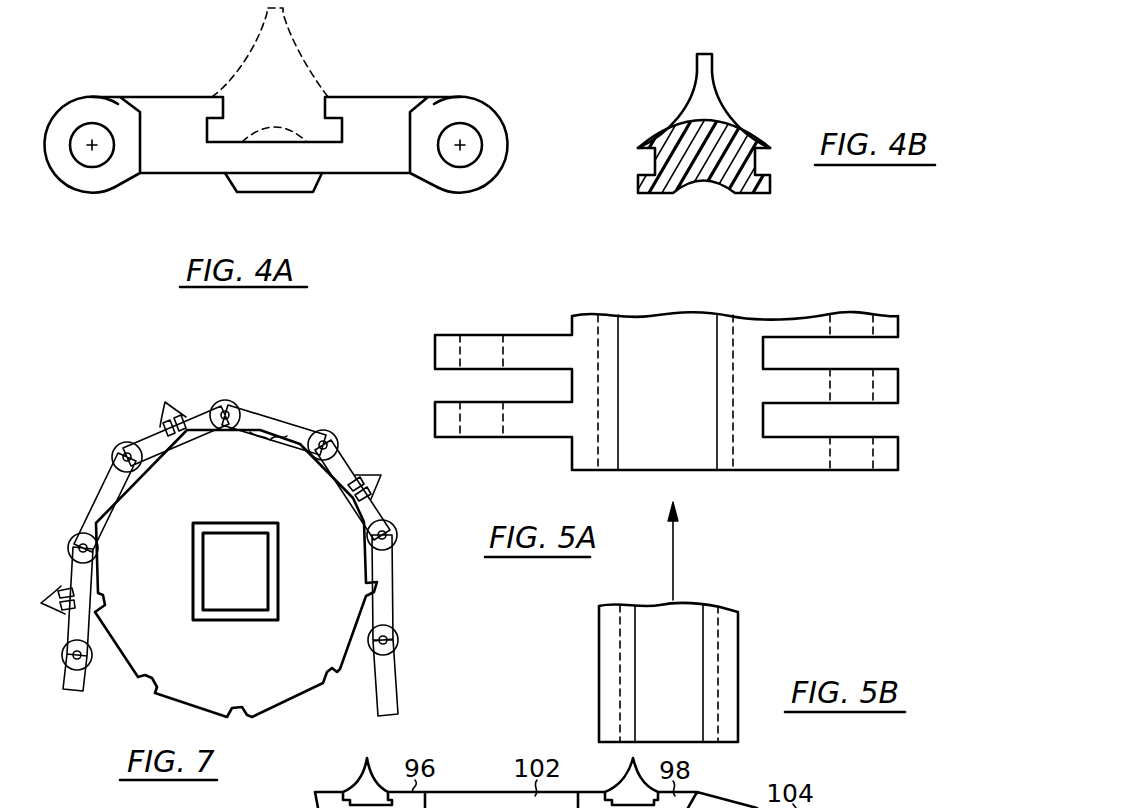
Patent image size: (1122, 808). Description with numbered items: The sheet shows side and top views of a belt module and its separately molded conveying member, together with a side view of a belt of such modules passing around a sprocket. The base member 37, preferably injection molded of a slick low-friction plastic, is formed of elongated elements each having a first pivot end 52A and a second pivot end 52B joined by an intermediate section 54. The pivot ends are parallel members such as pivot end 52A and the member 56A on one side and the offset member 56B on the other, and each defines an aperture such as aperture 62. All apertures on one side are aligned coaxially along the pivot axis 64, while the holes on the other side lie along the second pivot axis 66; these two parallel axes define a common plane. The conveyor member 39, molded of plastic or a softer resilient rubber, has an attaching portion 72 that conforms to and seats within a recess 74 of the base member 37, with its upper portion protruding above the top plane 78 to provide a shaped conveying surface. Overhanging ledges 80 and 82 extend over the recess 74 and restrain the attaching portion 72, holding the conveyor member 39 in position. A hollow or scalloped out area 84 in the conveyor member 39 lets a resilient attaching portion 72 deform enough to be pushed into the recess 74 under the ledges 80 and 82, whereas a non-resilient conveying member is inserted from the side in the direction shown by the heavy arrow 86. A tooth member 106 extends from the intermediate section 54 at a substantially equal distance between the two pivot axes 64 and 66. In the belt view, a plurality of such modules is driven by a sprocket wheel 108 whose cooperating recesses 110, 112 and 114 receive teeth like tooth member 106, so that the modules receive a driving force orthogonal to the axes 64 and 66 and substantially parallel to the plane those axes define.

In FIG. 4A, the base member 37 is at (325, 158).
In FIG. 5A, the base member 37 is at (583, 463).
In FIG. 4B, the conveyor member 39 is at (715, 72).
In FIG. 5B, the conveyor member 39 is at (730, 633).
In FIG. 4A, the first pivot end 52A is at (478, 183).
In FIG. 5A, the first pivot end 52A is at (897, 463).
In FIG. 4A, the second pivot end 52B is at (82, 186).
In FIG. 5A, the second pivot end 52B is at (435, 419).
In FIG. 4A, the intermediate section 54 is at (212, 158).
In FIG. 5A, the parallel member 56A is at (885, 397).
In FIG. 5A, the parallel member 56B is at (435, 352).
In FIG. 4A, the aperture 62 is at (452, 160).
In FIG. 5A, the aperture 62 is at (848, 463).
In FIG. 4A, the pivot axis 64 is at (461, 137).
In FIG. 4A, the second pivot axis 66 is at (91, 137).
In FIG. 4B, the attaching portion 72 is at (723, 178).
In FIG. 4A, the recess 74 is at (258, 116).
In FIG. 5A, the recess 74 is at (663, 331).
In FIG. 4A, the top plane 78 is at (397, 97).
In FIG. 4A, the ledge 80 is at (220, 96).
In FIG. 5A, the ledge 80 is at (612, 379).
In FIG. 4A, the ledge 82 is at (334, 99).
In FIG. 5A, the ledge 82 is at (717, 430).
In FIG. 4B, the hollow or scalloped out area 84 is at (702, 183).
In FIG. 5B, the heavy arrow 86 is at (674, 565).
In FIG. 4A, the tooth member 106 is at (278, 190).
In FIG. 7, the sprocket wheel 108 is at (302, 690).
In FIG. 7, the cooperating recess 110 is at (185, 440).
In FIG. 7, the cooperating recess 112 is at (270, 437).
In FIG. 7, the cooperating recess 114 is at (345, 490).